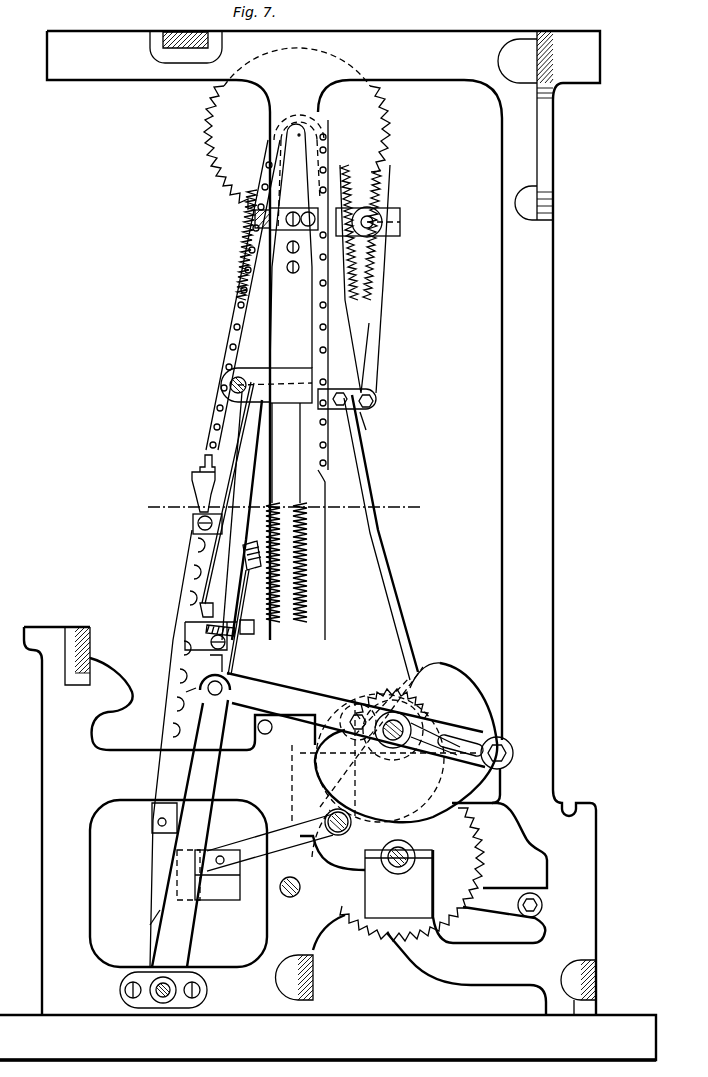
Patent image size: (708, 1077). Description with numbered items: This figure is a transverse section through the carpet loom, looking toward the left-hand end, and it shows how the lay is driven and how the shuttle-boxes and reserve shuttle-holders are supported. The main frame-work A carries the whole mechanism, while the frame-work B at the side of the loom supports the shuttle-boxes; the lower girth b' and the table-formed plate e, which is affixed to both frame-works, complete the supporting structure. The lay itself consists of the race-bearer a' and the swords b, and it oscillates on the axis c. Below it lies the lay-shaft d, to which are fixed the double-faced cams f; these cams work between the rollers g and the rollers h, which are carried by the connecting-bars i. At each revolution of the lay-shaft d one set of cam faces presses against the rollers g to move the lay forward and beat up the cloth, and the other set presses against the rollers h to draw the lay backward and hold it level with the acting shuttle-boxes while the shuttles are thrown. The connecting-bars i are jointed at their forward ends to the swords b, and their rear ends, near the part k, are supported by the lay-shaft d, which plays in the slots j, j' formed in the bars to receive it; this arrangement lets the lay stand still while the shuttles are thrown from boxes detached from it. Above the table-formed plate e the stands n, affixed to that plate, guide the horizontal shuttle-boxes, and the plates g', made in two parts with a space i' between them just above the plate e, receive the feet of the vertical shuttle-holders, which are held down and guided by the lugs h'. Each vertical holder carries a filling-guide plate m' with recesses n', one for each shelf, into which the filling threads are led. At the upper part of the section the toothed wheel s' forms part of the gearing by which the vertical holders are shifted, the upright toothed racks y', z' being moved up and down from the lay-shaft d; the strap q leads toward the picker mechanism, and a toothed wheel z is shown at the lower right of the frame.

The main frame-work A is at (328, 545).
The frame-work B is at (285, 501).
The toothed wheel s' is at (297, 128).
The axis c is at (272, 258).
The lay-shaft d is at (304, 562).
The rollers h is at (332, 380).
The upright toothed rack y' is at (357, 346).
The toothed rack z' is at (377, 331).
The girth b' is at (243, 295).
The plate g' is at (220, 516).
The lugs h' is at (216, 523).
The recesses n' is at (227, 499).
The filling-guide plate m' is at (177, 748).
The race-bearer a' is at (241, 608).
The table-formed plate e is at (219, 635).
The sword b is at (206, 701).
The space i' is at (213, 649).
The stands n is at (186, 685).
The connecting-bars i is at (356, 720).
The strap q is at (275, 772).
The pivot k is at (502, 753).
The double-faced cams f is at (398, 742).
The slot j' is at (406, 724).
The slots j is at (435, 745).
The rollers g is at (150, 923).
The gear z is at (398, 874).